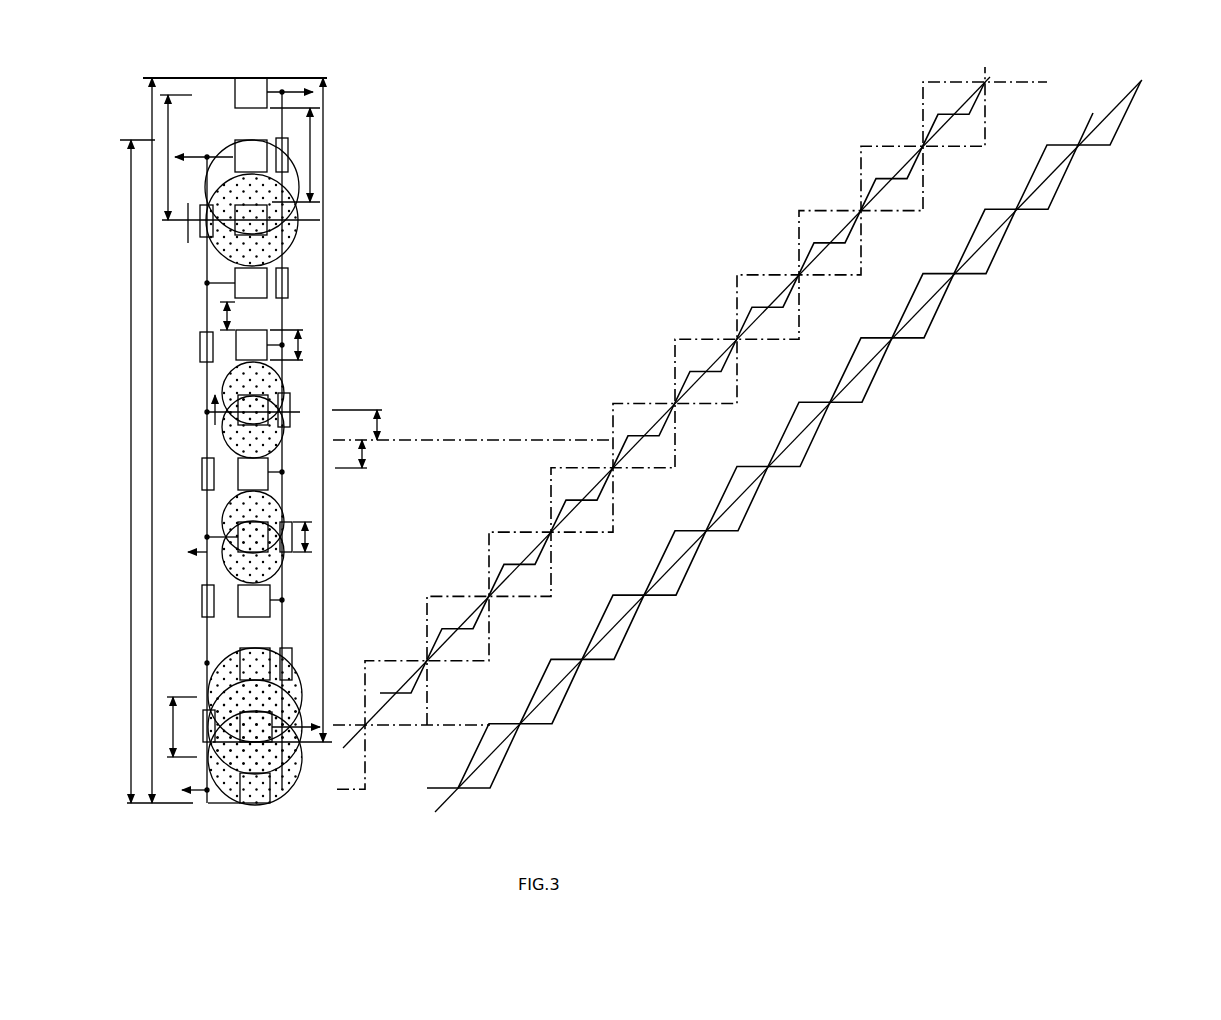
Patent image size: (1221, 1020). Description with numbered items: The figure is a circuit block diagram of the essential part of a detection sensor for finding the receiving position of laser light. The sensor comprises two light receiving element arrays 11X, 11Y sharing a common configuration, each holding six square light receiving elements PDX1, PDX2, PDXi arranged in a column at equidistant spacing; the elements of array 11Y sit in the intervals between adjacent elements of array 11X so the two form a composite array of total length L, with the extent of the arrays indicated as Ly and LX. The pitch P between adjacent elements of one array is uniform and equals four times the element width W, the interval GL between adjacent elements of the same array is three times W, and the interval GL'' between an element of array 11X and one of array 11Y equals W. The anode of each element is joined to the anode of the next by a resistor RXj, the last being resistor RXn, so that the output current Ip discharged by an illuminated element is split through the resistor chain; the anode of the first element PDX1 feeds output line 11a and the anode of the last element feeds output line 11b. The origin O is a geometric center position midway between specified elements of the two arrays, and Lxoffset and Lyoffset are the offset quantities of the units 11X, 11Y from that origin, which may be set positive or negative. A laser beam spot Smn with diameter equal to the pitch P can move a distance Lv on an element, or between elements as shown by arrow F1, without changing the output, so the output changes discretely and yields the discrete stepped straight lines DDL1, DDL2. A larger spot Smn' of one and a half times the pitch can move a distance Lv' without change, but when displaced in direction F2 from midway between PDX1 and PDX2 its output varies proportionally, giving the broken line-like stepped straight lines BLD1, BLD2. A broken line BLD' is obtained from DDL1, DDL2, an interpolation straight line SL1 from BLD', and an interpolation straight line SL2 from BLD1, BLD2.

The light receiving element array 11X is at (338, 270).
The light receiving element array 11Y is at (200, 448).
The output line 11a is at (281, 92).
The output line 11b is at (300, 742).
The light receiving element PDX1 is at (237, 78).
The light receiving element PDX2 is at (272, 227).
The light receiving element PDXi is at (268, 488).
The resistor RXj is at (290, 410).
The resistor RXn is at (205, 710).
The laser beam spot Smn is at (300, 470).
The laser beam spot Smn' is at (296, 489).
The interval GL is at (295, 155).
The interval GL'' is at (248, 316).
The width W is at (294, 345).
The pitch P is at (176, 157).
The sensor length L is at (152, 412).
The Y sensor length Ly is at (126, 471).
The X sensor length LX is at (311, 410).
The distance Lv is at (326, 537).
The distance Lv' is at (182, 727).
The arrow F1 is at (207, 412).
The movement direction F2 is at (188, 228).
The output current Ip is at (197, 563).
The Lx offset Lxoffset is at (389, 425).
The Ly offset Lyoffset is at (382, 457).
The origin O is at (520, 433).
The interpolation straight line SL1 is at (835, 240).
The interpolation straight line SL2 is at (758, 535).
The broken line-like stepped straight line BLD' is at (682, 387).
The broken line-like stepped straight line BLD1 is at (868, 387).
The broken line-like stepped straight line BLD2 is at (846, 368).
The discrete stepped straight line DDL1 is at (688, 336).
The discrete stepped straight line DDL2 is at (628, 400).